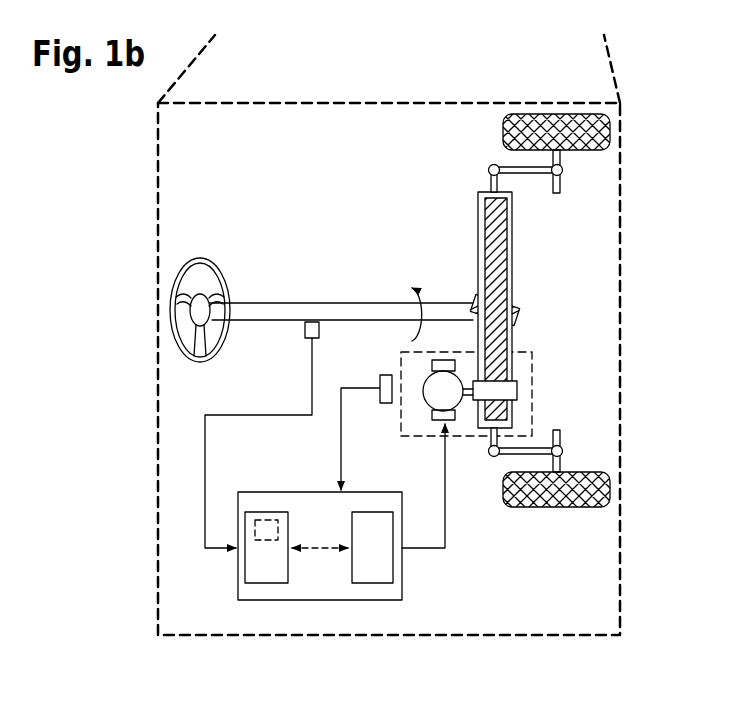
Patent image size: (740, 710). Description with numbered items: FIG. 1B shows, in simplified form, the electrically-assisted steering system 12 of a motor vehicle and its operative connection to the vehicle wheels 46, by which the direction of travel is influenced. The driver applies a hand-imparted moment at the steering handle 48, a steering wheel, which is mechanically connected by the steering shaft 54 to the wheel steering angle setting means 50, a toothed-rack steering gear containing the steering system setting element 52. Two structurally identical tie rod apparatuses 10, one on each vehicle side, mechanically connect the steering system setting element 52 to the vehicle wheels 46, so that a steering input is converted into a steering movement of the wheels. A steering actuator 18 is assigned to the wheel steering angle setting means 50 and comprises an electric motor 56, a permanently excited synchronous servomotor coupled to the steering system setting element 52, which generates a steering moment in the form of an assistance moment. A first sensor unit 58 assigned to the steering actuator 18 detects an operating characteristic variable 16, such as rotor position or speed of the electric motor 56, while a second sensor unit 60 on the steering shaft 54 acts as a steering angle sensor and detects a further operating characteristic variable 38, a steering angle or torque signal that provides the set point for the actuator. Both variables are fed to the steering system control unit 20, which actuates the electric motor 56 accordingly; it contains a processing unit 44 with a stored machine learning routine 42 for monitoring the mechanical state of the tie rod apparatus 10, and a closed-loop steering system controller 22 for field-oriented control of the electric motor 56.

The tie rod apparatus 10 is at (480, 161).
The steering system 12 is at (592, 290).
The operating characteristic variable 16 is at (341, 437).
The steering actuator 18 is at (541, 364).
The steering system control unit 20 is at (273, 488).
The closed-loop steering system controller 22 is at (378, 601).
The further operating characteristic variable 38 is at (205, 481).
The machine learning routine 42 is at (262, 543).
The processing unit 44 is at (267, 584).
The vehicle wheel 46 is at (607, 491).
The steering handle 48 is at (185, 262).
The wheel steering angle setting means 50 is at (468, 229).
The steering system setting element 52 is at (499, 251).
The steering shaft 54 is at (338, 290).
The electric motor 56 is at (430, 373).
The first sensor unit 58 is at (385, 413).
The second sensor unit 60 is at (294, 339).